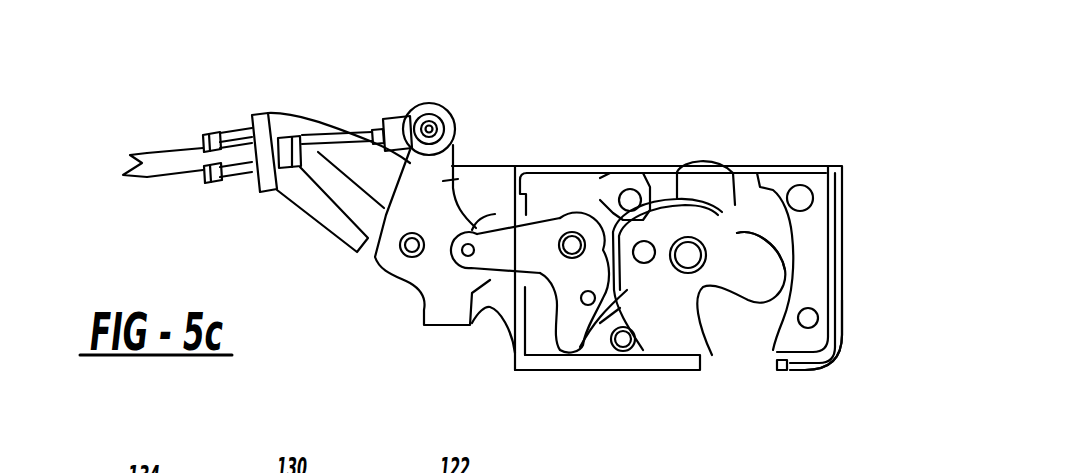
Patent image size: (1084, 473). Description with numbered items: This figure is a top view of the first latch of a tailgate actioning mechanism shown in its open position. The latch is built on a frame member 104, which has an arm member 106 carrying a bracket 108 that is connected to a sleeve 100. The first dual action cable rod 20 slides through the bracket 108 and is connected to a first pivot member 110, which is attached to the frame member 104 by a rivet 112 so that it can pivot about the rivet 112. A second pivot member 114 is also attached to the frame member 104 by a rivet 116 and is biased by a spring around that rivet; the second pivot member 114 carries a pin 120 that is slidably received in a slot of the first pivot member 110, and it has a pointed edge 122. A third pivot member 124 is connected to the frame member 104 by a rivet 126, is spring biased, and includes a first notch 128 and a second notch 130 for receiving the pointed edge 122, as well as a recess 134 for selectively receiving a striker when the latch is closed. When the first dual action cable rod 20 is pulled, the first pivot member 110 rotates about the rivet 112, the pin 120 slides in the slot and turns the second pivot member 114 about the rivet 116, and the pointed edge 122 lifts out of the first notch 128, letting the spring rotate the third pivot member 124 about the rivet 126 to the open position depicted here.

The sleeve 100 is at (143, 153).
The frame member 104 is at (831, 333).
The arm member 106 is at (293, 120).
The bracket 108 is at (240, 180).
The first pivot member 110 is at (490, 168).
The rivet 112 is at (414, 243).
The second pivot member 114 is at (493, 252).
The rivet 116 is at (573, 236).
The pin 120 is at (469, 248).
The pointed edge 122 is at (583, 352).
The third pivot member 124 is at (678, 302).
The rivet 126 is at (710, 166).
The first notch 128 is at (690, 255).
The notch 130 is at (638, 303).
The recess 134 is at (767, 230).
The first dual action cable rod 20 is at (405, 108).